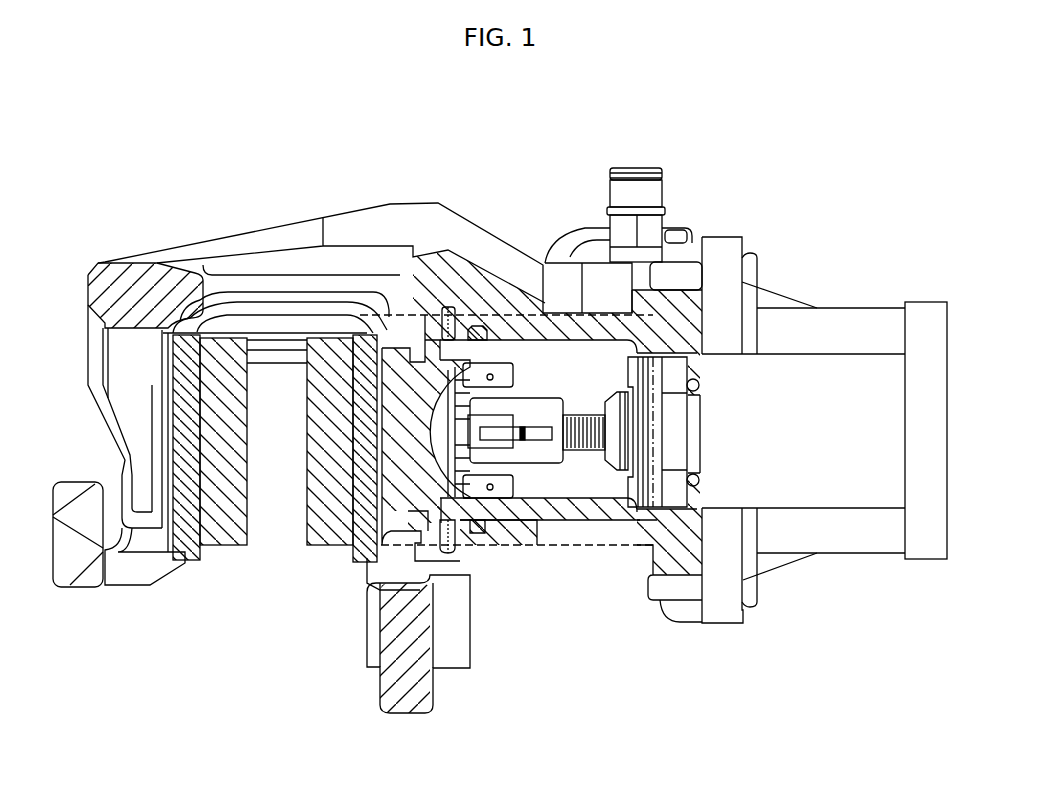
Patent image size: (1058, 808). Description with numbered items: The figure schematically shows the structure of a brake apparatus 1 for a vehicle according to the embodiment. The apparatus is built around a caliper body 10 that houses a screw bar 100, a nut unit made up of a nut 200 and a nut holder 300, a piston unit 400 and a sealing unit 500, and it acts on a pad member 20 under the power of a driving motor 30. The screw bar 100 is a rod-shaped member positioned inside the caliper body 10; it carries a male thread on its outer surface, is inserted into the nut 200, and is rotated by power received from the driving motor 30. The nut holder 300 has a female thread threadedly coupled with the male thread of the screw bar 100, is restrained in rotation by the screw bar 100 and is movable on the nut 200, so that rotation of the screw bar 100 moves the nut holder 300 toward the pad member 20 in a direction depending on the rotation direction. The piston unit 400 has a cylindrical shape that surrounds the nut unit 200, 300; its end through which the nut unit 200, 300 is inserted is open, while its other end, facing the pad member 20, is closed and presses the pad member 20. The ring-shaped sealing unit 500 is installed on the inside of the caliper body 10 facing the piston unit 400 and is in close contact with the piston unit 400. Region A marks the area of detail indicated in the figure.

The brake apparatus 1 is at (906, 109).
The caliper body 10 is at (245, 243).
The pad member 20 is at (330, 523).
The driving motor 30 is at (828, 373).
The screw bar 100 is at (583, 447).
The nut 200 is at (447, 400).
The nut holder 300 is at (482, 377).
The piston unit 400 is at (557, 523).
The sealing unit 500 is at (480, 523).
The region A is at (512, 317).